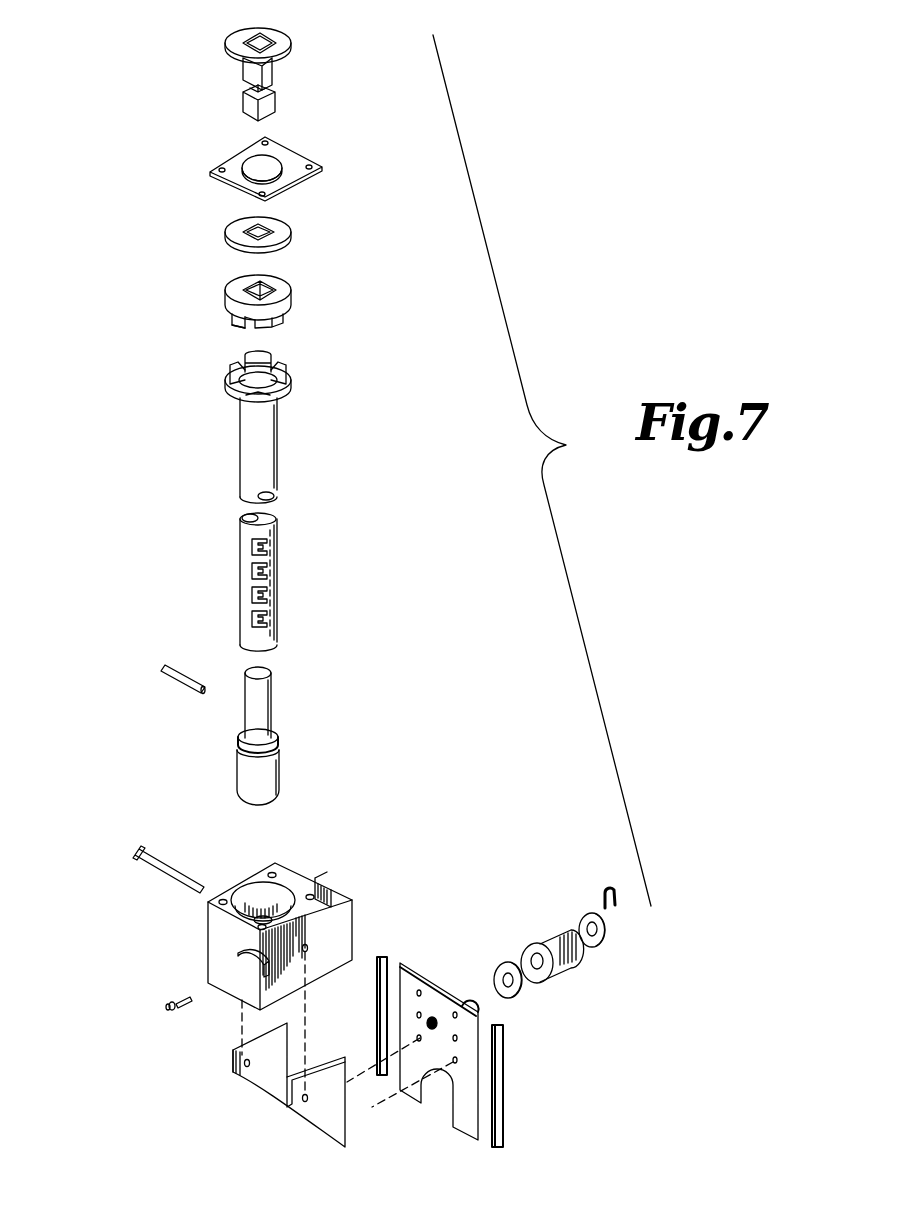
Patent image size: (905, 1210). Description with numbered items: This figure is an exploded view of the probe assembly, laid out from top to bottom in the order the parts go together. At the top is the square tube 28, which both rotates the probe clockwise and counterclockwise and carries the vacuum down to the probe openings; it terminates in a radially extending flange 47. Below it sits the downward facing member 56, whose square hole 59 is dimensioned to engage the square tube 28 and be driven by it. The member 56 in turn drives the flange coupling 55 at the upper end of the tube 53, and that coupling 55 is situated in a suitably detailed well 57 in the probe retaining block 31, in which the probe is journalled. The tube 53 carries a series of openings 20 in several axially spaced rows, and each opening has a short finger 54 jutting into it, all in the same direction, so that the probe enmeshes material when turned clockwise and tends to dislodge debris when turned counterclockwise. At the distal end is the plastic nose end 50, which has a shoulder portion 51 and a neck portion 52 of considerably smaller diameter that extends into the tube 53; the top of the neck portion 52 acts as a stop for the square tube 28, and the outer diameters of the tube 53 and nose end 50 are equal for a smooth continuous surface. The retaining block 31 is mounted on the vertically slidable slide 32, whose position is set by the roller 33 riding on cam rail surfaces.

The radially extending flange 47 is at (284, 45).
The square tube 28 is at (272, 105).
The square hole 59 is at (266, 292).
The downward facing member 56 is at (320, 279).
The flange coupling 55 is at (292, 380).
The tube 53 is at (328, 572).
The openings 20 is at (270, 578).
The short finger 54 is at (253, 612).
The neck portion 52 is at (265, 692).
The shoulder portion 51 is at (283, 735).
The plastic nose end 50 is at (262, 770).
The well 57 is at (270, 892).
The probe retaining block 31 is at (231, 962).
The slide 32 is at (437, 1003).
The roller 33 is at (547, 943).